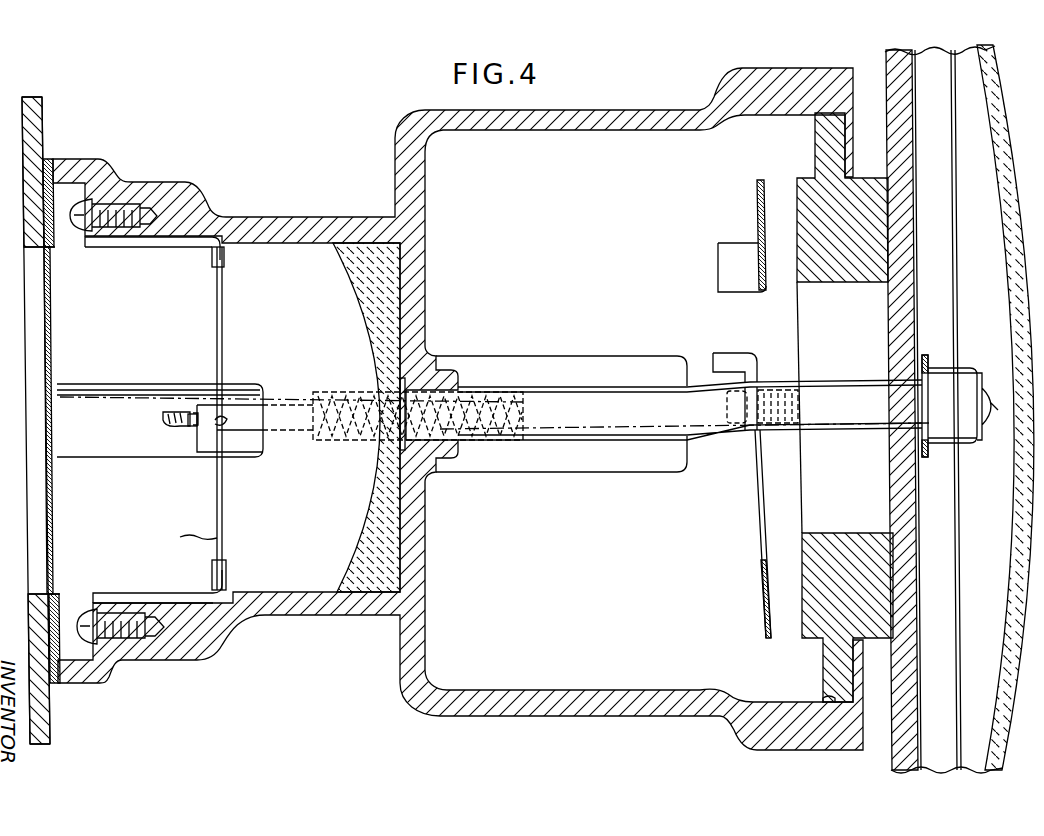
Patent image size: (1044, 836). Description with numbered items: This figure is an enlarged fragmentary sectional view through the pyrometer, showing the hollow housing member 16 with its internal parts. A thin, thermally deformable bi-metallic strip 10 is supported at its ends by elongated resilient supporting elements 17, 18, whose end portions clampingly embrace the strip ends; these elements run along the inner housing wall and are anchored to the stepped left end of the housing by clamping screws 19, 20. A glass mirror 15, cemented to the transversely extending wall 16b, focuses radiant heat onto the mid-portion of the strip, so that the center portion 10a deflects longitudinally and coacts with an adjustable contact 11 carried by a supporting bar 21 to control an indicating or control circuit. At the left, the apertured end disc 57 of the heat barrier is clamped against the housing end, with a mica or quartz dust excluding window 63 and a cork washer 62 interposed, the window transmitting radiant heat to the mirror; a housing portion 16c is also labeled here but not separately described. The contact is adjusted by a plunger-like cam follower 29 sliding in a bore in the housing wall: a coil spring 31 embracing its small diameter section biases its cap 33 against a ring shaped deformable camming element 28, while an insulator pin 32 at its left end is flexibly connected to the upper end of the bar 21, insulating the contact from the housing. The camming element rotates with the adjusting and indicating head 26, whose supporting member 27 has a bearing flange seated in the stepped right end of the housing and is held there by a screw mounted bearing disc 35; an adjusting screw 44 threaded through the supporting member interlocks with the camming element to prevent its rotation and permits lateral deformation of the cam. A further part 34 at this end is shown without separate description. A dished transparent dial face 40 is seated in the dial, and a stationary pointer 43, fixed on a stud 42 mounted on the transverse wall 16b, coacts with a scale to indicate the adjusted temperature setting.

The end disc 57 is at (43, 136).
The cork washer 62 is at (50, 250).
The dust excluding window 63 is at (50, 344).
The hollow housing member 16 is at (345, 616).
The transversely extending wall 16b is at (432, 530).
The housing lug 16c is at (70, 684).
The mirror 15 is at (363, 312).
The stud 42 is at (655, 434).
The coil spring 31 is at (347, 447).
The cam follower plunger 29 is at (295, 431).
The center portion of the thermostatic strip 10a is at (222, 426).
The supporting bar 21 is at (165, 416).
The insulator pin 32 is at (192, 414).
The adjustable contact 11 is at (195, 428).
The bi-metallic strip 10 is at (223, 355).
The supporting element 17 is at (163, 248).
The clamping screw 19 is at (115, 232).
The supporting element 18 is at (104, 603).
The clamping screw 20 is at (143, 636).
The supporting member 27 is at (850, 284).
The bearing disc 35 is at (863, 70).
The retaining element 34 is at (826, 704).
The rotatable adjusting and indicating head 26 is at (893, 771).
The dished transparent dial face 40 is at (1015, 645).
The stationary pointer 43 is at (930, 456).
The deformable camming element 28 is at (757, 200).
The adjusting screw 44 is at (793, 425).
The cap 33 is at (733, 425).